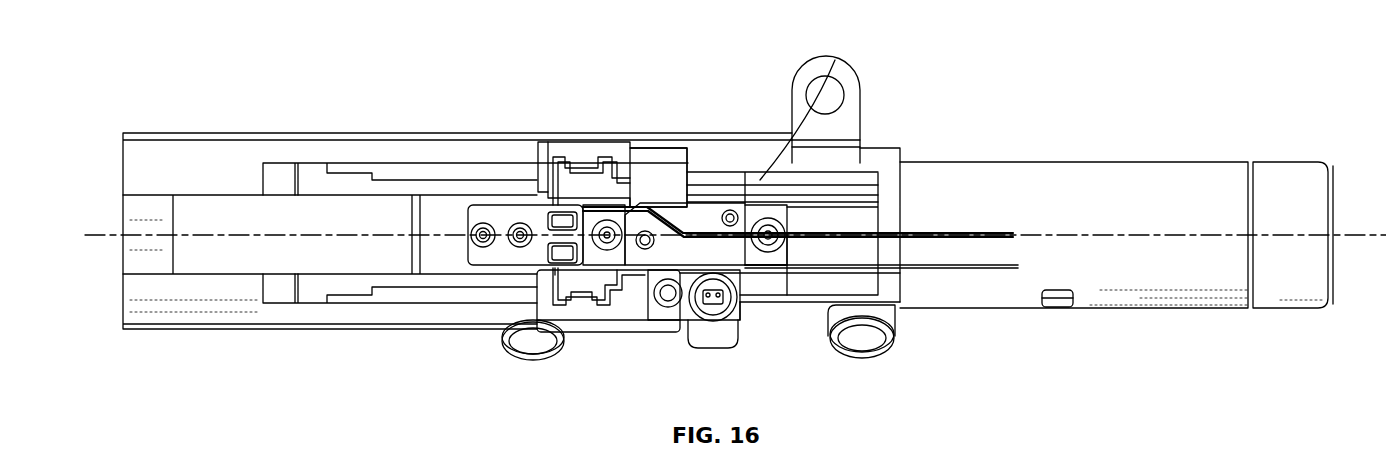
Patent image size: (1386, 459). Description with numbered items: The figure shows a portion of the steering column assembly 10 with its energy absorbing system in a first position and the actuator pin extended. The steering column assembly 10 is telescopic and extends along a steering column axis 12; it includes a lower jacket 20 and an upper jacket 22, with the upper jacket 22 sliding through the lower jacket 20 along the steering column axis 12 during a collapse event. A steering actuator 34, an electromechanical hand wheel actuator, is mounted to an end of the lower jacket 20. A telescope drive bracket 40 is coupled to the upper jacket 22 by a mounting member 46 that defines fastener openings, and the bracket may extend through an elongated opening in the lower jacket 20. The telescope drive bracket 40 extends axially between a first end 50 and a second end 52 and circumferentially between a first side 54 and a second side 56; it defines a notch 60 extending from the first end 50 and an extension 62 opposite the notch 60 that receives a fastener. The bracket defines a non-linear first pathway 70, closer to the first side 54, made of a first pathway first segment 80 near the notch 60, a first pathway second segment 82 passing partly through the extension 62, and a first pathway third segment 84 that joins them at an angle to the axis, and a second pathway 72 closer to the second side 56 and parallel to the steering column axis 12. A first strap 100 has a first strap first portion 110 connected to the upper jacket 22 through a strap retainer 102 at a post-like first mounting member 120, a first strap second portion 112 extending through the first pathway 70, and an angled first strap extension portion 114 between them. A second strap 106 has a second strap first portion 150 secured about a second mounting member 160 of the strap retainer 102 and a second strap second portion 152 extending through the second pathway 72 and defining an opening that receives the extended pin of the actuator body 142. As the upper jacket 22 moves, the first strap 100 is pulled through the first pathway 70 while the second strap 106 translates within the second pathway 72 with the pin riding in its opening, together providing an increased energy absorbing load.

The steering column assembly 10 is at (205, 80).
The steering column axis 12 is at (1374, 244).
The lower jacket 20 is at (326, 129).
The upper jacket 22 is at (1093, 156).
The steering actuator 34 is at (707, 350).
The telescope drive bracket 40 is at (688, 141).
The mounting member 46 is at (608, 268).
The first end 50 is at (528, 157).
The second end 52 is at (695, 157).
The first side 54 is at (608, 338).
The second side 56 is at (638, 141).
The notch 60 is at (527, 276).
The extension 62 is at (757, 205).
The first pathway 70 is at (690, 272).
The second pathway 72 is at (765, 280).
The first pathway first segment 80 is at (622, 210).
The first pathway second segment 82 is at (810, 105).
The first pathway third segment 84 is at (734, 213).
The first strap 100 is at (861, 231).
The strap retainer 102 is at (452, 193).
The second strap 106 is at (948, 271).
The first strap first portion 110 is at (550, 212).
The first strap second portion 112 is at (848, 233).
The first strap extension portion 114 is at (656, 214).
The first mounting member 120 is at (562, 212).
The actuator body 142 is at (737, 323).
The second strap first portion 150 is at (512, 360).
The second strap second portion 152 is at (823, 302).
The second mounting member 160 is at (556, 268).